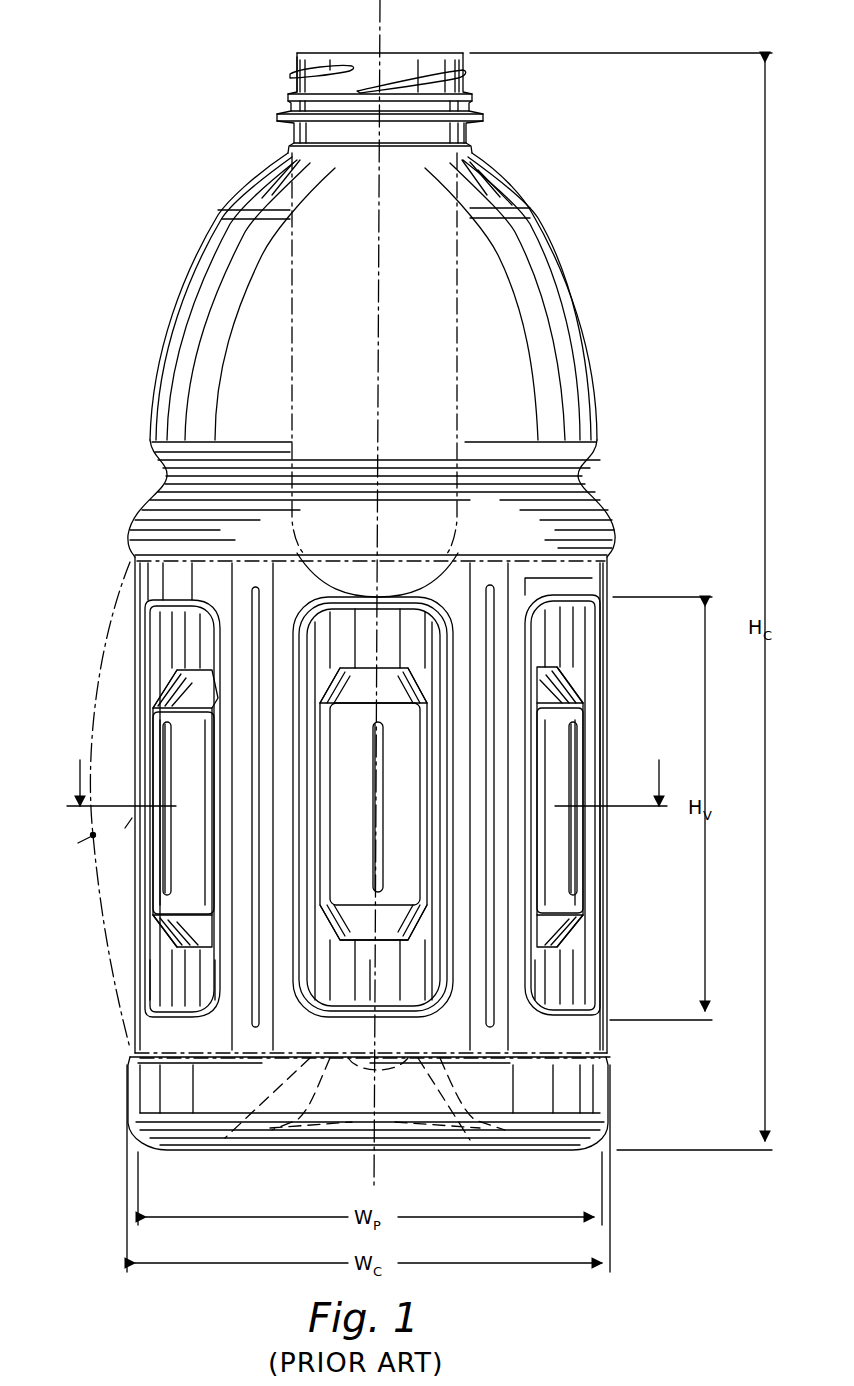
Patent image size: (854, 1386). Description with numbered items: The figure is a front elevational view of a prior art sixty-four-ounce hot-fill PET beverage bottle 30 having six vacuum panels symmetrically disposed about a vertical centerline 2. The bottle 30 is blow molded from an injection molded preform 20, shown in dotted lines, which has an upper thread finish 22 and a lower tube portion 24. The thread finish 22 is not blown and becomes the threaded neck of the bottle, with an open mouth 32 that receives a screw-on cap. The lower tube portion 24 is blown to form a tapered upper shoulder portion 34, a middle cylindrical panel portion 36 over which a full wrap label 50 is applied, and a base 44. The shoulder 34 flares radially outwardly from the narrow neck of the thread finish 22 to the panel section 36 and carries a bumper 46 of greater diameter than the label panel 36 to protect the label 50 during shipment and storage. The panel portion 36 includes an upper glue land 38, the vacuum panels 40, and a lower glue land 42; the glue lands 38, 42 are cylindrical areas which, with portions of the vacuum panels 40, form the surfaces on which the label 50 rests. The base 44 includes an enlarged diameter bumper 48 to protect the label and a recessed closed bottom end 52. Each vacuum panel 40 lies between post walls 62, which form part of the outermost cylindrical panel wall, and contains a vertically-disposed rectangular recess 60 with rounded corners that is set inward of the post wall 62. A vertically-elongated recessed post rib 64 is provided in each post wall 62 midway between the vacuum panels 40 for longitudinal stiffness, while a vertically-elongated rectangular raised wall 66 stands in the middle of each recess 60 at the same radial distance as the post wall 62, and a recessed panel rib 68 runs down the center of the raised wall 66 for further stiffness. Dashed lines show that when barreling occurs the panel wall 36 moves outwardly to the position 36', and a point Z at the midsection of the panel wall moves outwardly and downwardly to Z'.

The vertical centerline 2 is at (383, 35).
The injection molded preform 20 is at (290, 262).
The upper thread finish 22 is at (292, 86).
The lower tube portion 24 is at (478, 192).
The bottle 30 is at (158, 357).
The open mouth 32 is at (323, 52).
The tapered upper shoulder portion 34 is at (182, 303).
The middle cylindrical panel portion 36 is at (331, 804).
The outwardly moved panel wall 36' is at (80, 805).
The upper glue land 38 is at (592, 578).
The vacuum panels 40 is at (572, 662).
The lower glue land 42 is at (585, 1038).
The base 44 is at (598, 1147).
The bumper 46 is at (612, 543).
The enlarged diameter bumper 48 is at (608, 1068).
The full wrap label 50 is at (196, 556).
The recessed closed bottom end 52 is at (450, 1132).
The rectangular recess 60 is at (390, 628).
The post wall 62 is at (269, 609).
The post rib 64 is at (185, 626).
The raised wall 66 is at (76, 912).
The panel rib 68 is at (378, 876).